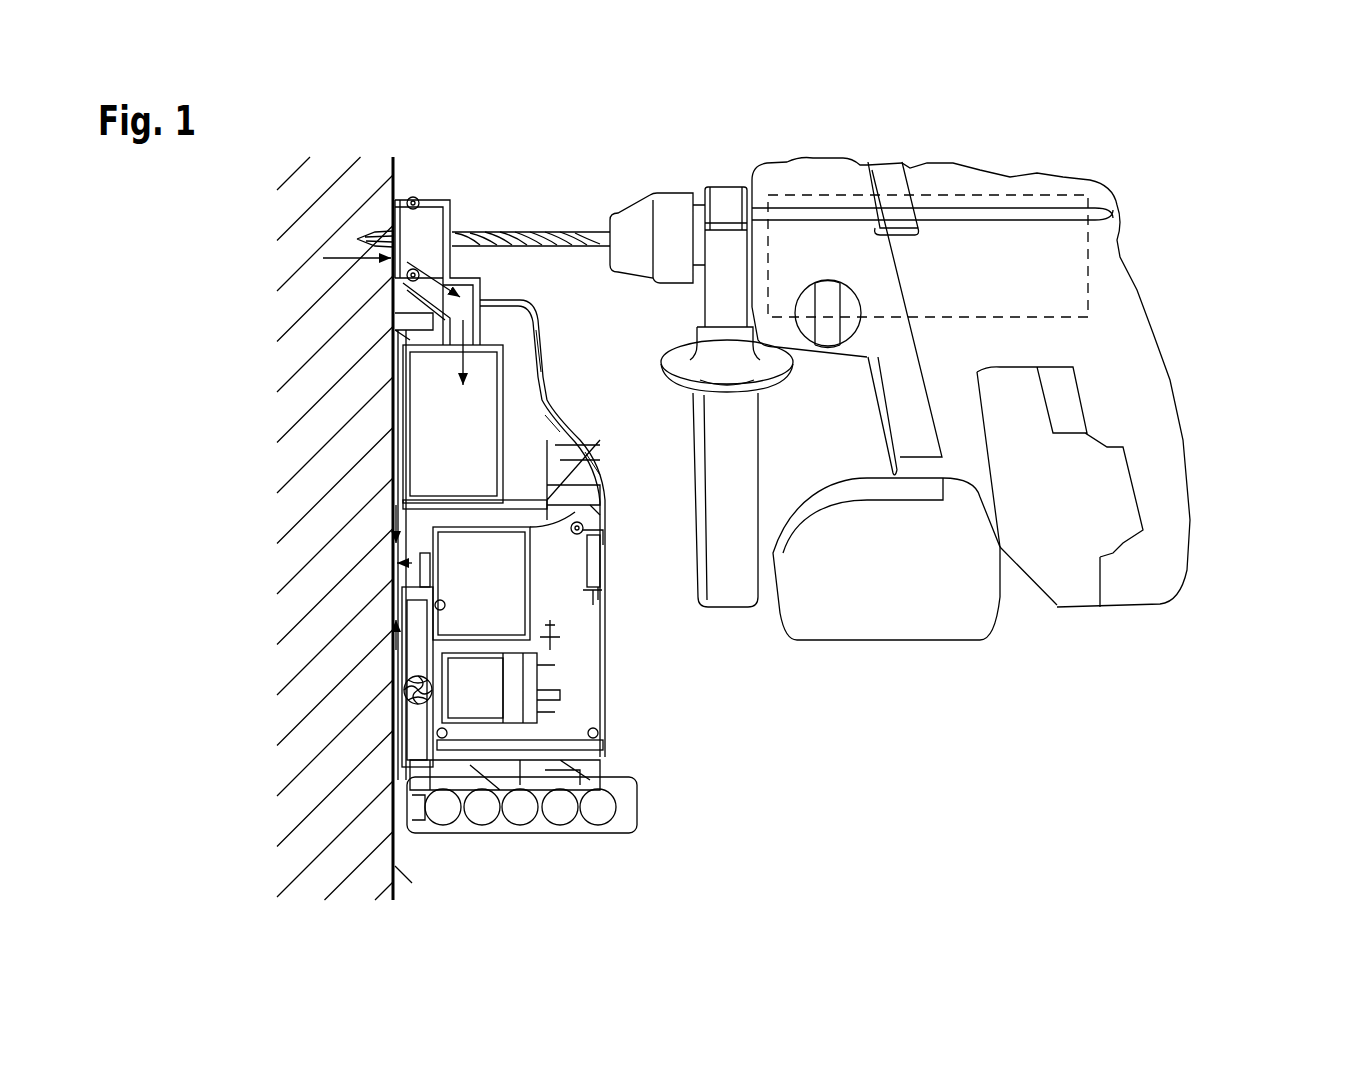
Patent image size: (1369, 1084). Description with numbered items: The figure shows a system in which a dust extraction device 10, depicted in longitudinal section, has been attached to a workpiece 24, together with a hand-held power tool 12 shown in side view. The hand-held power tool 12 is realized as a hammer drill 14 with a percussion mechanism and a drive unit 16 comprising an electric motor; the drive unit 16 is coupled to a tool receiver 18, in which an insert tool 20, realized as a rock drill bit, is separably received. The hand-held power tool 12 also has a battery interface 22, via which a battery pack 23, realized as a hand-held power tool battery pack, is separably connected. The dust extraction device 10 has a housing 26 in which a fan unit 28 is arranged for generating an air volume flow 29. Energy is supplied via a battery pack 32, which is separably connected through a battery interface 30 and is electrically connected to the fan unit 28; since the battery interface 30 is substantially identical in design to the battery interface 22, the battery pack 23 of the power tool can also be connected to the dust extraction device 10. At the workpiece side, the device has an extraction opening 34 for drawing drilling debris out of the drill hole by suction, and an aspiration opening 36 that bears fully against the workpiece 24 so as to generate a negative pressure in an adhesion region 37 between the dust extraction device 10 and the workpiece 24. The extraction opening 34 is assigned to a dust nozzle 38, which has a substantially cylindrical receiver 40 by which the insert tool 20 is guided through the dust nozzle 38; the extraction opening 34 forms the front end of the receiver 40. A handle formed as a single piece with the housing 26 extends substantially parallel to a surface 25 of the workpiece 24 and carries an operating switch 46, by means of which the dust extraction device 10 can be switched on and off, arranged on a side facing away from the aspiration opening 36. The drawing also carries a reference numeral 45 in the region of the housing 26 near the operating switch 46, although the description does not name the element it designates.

The dust extraction device 10 is at (482, 198).
The hand-held power tool 12 is at (1027, 383).
The hammer drill 14 is at (1185, 288).
The drive unit 16 is at (1113, 250).
The tool receiver 18 is at (636, 190).
The insert tool 20 is at (561, 232).
The battery interface 22 is at (823, 470).
The battery pack 23 is at (1020, 648).
The workpiece 24 is at (322, 828).
The surface 25 is at (397, 866).
The housing 26 is at (585, 400).
The fan unit 28 is at (560, 687).
The air volume flow 29 is at (333, 262).
The battery interface 30 is at (630, 758).
The battery pack 32 is at (650, 840).
The extraction opening 34 is at (392, 222).
The aspiration opening 36 is at (395, 700).
The adhesion region 37 is at (400, 563).
The dust nozzle 38 is at (436, 190).
The receiver 40 is at (403, 225).
The hinge / holder 45 is at (615, 530).
The operating switch 46 is at (600, 548).